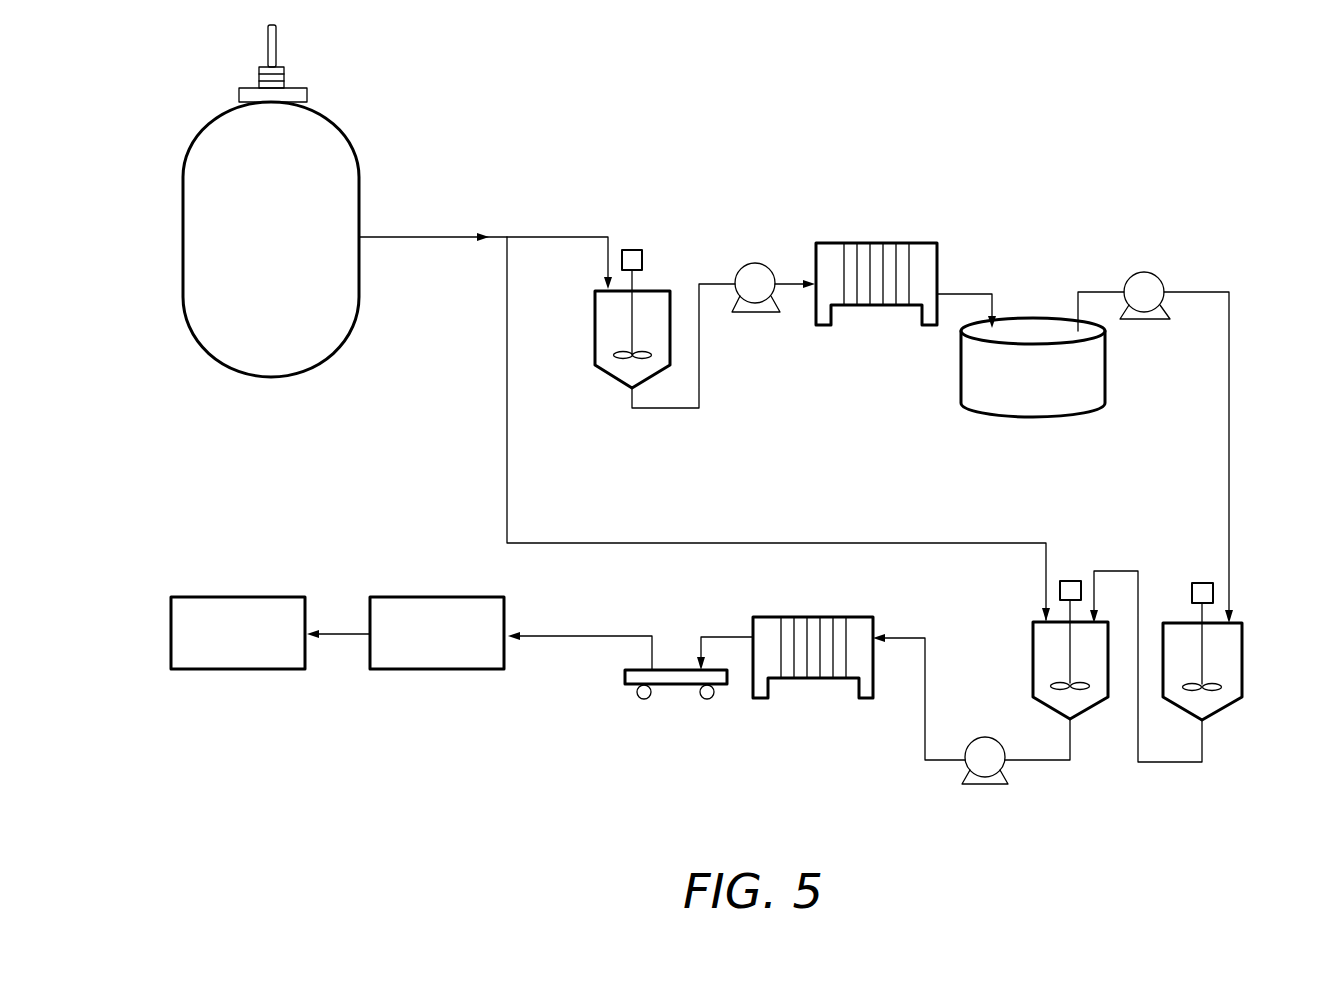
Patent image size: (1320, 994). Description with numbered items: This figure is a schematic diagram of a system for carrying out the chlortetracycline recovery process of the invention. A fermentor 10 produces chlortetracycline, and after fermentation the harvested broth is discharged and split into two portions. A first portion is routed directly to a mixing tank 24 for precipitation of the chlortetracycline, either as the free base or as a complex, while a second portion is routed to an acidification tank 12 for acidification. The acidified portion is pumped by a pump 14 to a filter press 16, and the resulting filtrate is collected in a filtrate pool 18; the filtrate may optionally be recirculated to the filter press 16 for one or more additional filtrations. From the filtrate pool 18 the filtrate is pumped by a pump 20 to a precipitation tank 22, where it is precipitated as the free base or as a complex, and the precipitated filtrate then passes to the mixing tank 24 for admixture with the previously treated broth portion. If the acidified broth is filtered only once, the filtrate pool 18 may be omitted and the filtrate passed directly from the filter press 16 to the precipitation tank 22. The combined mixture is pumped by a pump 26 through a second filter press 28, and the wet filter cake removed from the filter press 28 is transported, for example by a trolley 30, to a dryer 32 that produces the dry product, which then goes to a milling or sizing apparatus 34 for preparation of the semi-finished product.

The fermentor 10 is at (345, 138).
The acidification tank 12 is at (657, 291).
The pump 14 is at (763, 265).
The filter press 16 is at (937, 265).
The filtrate pool 18 is at (961, 362).
The pump 20 is at (1152, 272).
The precipitation tank 22 is at (1242, 653).
The mixing tank 24 is at (1033, 640).
The pump 26 is at (980, 737).
The filter press 28 is at (842, 678).
The trolley 30 is at (625, 677).
The dryer 32 is at (402, 669).
The milling or sizing apparatus 34 is at (203, 669).